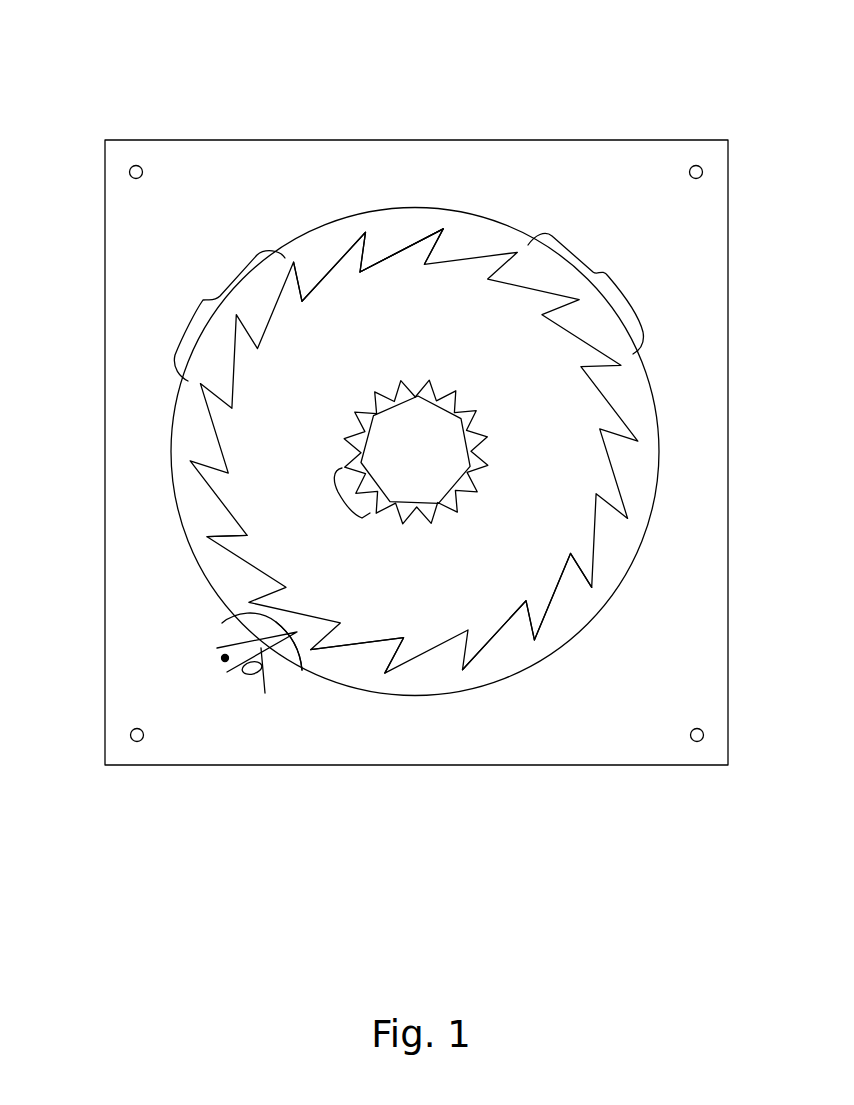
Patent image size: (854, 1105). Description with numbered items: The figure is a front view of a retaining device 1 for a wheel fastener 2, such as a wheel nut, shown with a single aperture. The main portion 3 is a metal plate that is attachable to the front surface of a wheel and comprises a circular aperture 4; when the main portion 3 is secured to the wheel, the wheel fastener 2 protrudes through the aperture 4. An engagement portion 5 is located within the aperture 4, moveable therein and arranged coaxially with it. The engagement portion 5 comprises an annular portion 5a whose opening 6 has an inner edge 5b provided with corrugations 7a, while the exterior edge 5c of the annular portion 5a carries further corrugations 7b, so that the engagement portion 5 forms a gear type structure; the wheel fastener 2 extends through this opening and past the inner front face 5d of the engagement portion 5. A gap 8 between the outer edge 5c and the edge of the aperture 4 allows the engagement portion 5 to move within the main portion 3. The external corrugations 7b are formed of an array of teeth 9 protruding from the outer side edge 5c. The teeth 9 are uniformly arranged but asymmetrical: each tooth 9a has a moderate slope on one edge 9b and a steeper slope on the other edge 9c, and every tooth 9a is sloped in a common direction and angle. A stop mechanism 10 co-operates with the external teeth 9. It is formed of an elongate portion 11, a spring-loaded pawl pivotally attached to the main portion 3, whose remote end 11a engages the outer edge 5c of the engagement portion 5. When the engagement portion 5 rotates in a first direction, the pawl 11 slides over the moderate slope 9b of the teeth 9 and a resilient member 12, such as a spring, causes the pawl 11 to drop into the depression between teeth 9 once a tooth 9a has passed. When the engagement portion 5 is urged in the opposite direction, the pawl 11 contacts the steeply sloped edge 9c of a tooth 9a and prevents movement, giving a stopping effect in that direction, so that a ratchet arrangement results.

The retaining device 1 is at (612, 123).
The wheel fastener 2 is at (442, 474).
The main portion 3 is at (697, 520).
The circular aperture 4 is at (580, 607).
The engagement portion 5 is at (480, 627).
The annular portion 5a is at (520, 390).
The inner edge 5b is at (420, 397).
The exterior edge 5c is at (357, 643).
The inner front face 5d is at (540, 583).
The opening 6 is at (377, 395).
The corrugations 7a is at (340, 502).
The corrugations 7b is at (607, 268).
The gap 8 is at (230, 547).
The teeth 9 is at (203, 300).
The tooth 9a is at (235, 573).
The moderate slope edge 9b is at (425, 255).
The steeper slope edge 9c is at (445, 250).
The stop mechanism 10 is at (242, 652).
The elongate portion 11 is at (225, 622).
The remote end 11a is at (302, 647).
The resilient member 12 is at (260, 652).